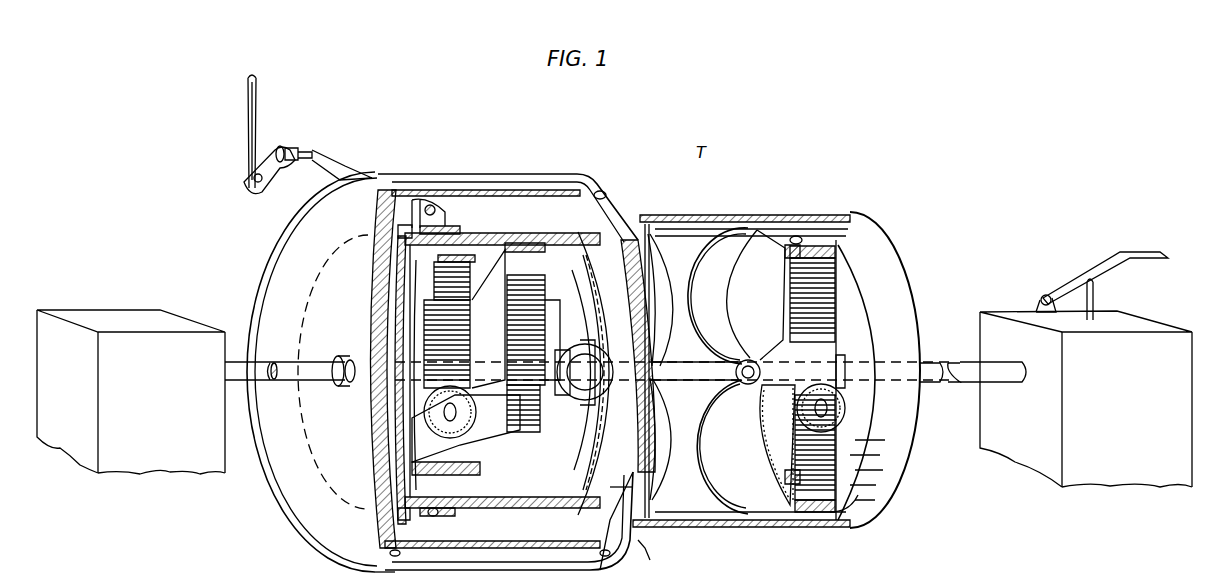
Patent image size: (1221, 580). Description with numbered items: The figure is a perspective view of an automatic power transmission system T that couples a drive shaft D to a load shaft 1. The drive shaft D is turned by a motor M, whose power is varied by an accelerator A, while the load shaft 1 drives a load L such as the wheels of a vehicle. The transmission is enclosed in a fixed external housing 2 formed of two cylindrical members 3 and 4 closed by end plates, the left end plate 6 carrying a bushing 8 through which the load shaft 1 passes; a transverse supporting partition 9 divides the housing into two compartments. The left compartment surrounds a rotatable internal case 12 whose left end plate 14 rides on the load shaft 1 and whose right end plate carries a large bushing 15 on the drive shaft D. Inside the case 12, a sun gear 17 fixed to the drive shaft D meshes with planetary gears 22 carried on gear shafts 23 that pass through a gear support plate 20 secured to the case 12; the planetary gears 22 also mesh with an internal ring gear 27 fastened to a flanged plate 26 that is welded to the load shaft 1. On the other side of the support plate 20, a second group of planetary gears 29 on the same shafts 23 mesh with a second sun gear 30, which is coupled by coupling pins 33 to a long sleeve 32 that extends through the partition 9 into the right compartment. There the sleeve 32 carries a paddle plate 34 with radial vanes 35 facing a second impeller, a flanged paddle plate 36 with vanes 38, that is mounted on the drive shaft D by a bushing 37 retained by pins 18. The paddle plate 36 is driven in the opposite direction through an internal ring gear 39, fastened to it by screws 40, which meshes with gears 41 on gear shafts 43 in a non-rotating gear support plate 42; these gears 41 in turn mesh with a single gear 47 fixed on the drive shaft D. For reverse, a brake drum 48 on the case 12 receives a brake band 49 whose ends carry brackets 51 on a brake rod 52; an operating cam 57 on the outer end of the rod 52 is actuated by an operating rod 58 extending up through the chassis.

The load shaft 1 is at (270, 358).
The external housing 2 is at (622, 526).
The cylindrical member 3 is at (522, 174).
The cylindrical member 4 is at (745, 218).
The left end plate 6 is at (386, 527).
The bushing 8 is at (345, 356).
The transverse supporting partition 9 is at (620, 478).
The internal cylindrical case 12 is at (590, 495).
The left end plate 14 is at (380, 408).
The bushing 15 is at (582, 392).
The sun gear 17 is at (458, 336).
The pins 18 is at (730, 400).
The gear support plate 20 is at (510, 280).
The planetary gears 22 is at (470, 285).
The gear shafts 23 is at (435, 430).
The flanged plate 26 is at (432, 262).
The internal ring gear 27 is at (432, 275).
The second group of planetary gears 29 is at (540, 292).
The second sun gear 30 is at (540, 312).
The sleeve 32 is at (562, 398).
The coupling pins 33 is at (575, 345).
The paddle plate 34 is at (700, 360).
The paddle blades or vanes 35 is at (670, 258).
The flanged paddle plate 36 is at (788, 270).
The bushing 37 is at (752, 350).
The paddle blades or vanes 38 is at (705, 308).
The internal ring gear 39 is at (850, 268).
The screws 40 is at (800, 236).
The gears 41 is at (838, 318).
The non-rotating gear support plate 42 is at (852, 512).
The gear shafts 43 is at (821, 411).
The single gear 47 is at (846, 365).
The brake drum 48 is at (455, 232).
The brake band 49 is at (495, 232).
The brackets 51 is at (432, 205).
The brake rod 52 is at (305, 158).
The operating cam 57 is at (270, 190).
The operating rod 58 is at (248, 104).
The accelerator A is at (1132, 252).
The drive shaft D is at (948, 372).
The load L is at (160, 470).
The motor M is at (1128, 478).